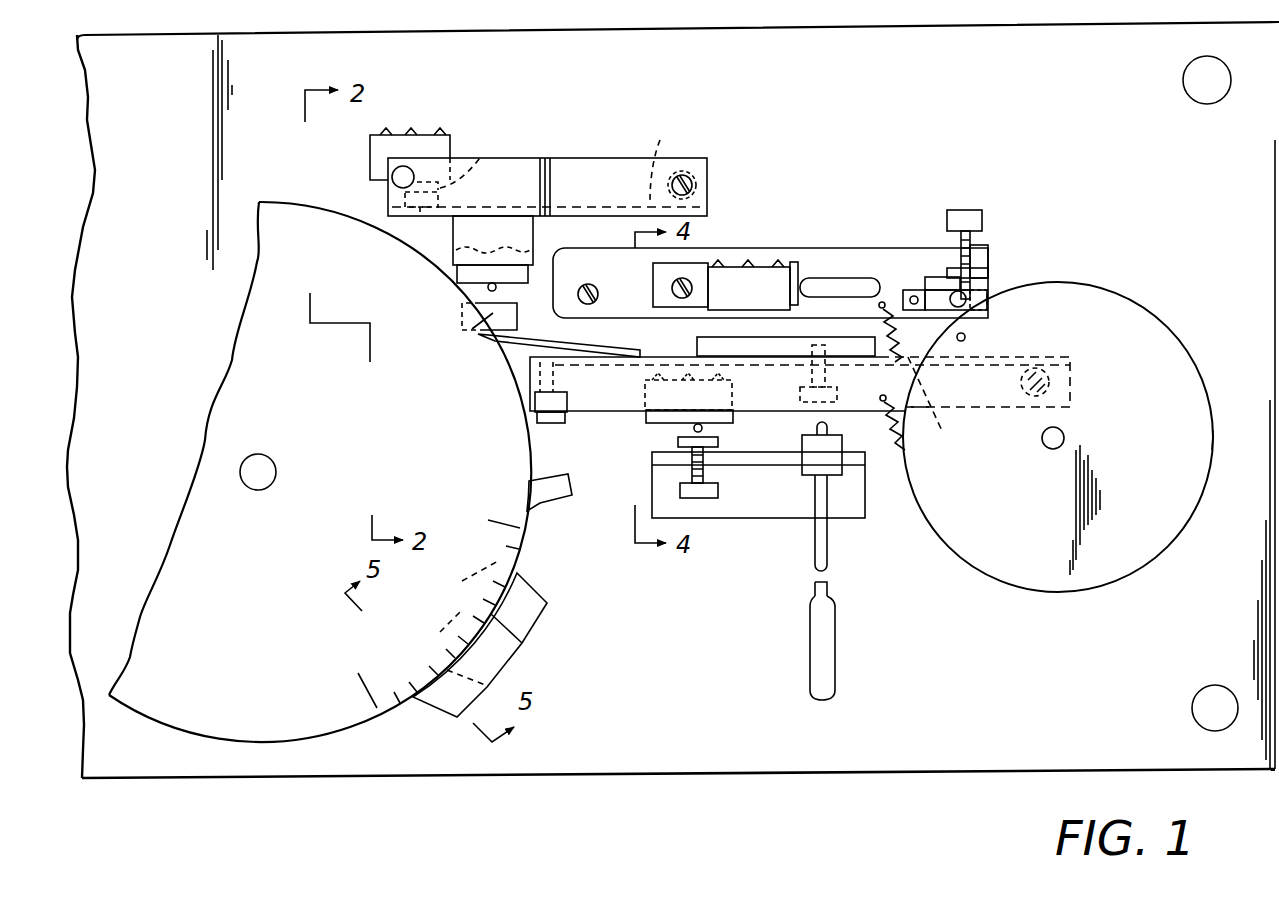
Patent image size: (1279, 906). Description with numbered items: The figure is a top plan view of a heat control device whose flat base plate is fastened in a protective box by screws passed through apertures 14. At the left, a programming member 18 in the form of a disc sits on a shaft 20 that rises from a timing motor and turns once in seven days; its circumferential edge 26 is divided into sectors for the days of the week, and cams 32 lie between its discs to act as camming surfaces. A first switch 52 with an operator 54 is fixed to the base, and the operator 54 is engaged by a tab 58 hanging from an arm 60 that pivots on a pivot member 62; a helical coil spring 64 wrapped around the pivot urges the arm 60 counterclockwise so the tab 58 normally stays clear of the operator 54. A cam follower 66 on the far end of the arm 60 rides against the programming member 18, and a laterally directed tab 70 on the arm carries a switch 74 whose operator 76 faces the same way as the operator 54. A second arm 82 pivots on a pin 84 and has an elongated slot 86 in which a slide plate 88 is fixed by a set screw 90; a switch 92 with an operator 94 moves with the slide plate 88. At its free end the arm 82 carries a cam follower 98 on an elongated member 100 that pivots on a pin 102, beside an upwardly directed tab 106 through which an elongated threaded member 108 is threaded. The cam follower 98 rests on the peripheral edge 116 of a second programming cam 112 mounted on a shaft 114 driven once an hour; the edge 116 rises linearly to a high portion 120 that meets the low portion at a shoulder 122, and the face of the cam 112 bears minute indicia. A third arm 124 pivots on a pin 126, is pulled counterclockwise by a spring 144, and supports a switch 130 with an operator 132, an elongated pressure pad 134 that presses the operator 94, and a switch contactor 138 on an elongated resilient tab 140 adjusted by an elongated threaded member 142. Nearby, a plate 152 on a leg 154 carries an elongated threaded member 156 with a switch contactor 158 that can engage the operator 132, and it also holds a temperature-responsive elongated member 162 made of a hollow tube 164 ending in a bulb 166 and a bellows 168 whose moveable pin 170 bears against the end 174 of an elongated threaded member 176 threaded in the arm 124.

The apertures 14 is at (1183, 84).
The programming member 18 is at (316, 744).
The shaft 20 is at (263, 490).
The circumferential edge 26 is at (521, 550).
The cams 32 is at (543, 505).
The first switch 52 is at (450, 135).
The operator 54 is at (480, 163).
The tab 58 is at (405, 199).
The arm 60 is at (573, 166).
The pivot member 62 is at (695, 180).
The helical coil spring 64 is at (660, 140).
The cam follower 66 is at (392, 177).
The laterally directed tab 70 is at (458, 226).
The switch 74 is at (457, 282).
The operator 76 is at (488, 291).
The arm 82 is at (902, 248).
The pin 84 is at (588, 284).
The elongated slot 86 is at (653, 284).
The slide plate 88 is at (770, 254).
The set screw 90 is at (684, 299).
The switch 92 is at (760, 268).
The operator 94 is at (800, 287).
The cam follower 98 is at (955, 292).
The elongated member 100 is at (944, 302).
The pin 102 is at (905, 292).
The upwardly directed tab 106 is at (993, 270).
The elongated threaded member 108 is at (963, 212).
The second programming cam 112 is at (1087, 421).
The shaft 114 is at (930, 401).
The peripheral edge 116 is at (1213, 442).
The high portion 120 is at (1075, 284).
The shoulder 122 is at (965, 326).
The arm 124 is at (1070, 403).
The pin 126 is at (1050, 376).
The switch 130 is at (735, 418).
The operator 132 is at (695, 430).
The pressure pad 134 is at (770, 346).
The switch contactor 138 is at (472, 329).
The elongated resilient tab 140 is at (560, 343).
The elongated threaded member 142 is at (548, 424).
The spring 144 is at (924, 475).
The plate 152 is at (758, 514).
The leg 154 is at (698, 520).
The elongated threaded member 156 is at (708, 520).
The switch contactor 158 is at (705, 468).
The elongated member 162 is at (828, 558).
The hollow tube 164 is at (815, 590).
The bulb 166 is at (833, 640).
The bellows 168 is at (835, 480).
The moveable pin 170 is at (827, 428).
The end 174 is at (798, 402).
The elongated threaded member 176 is at (828, 382).